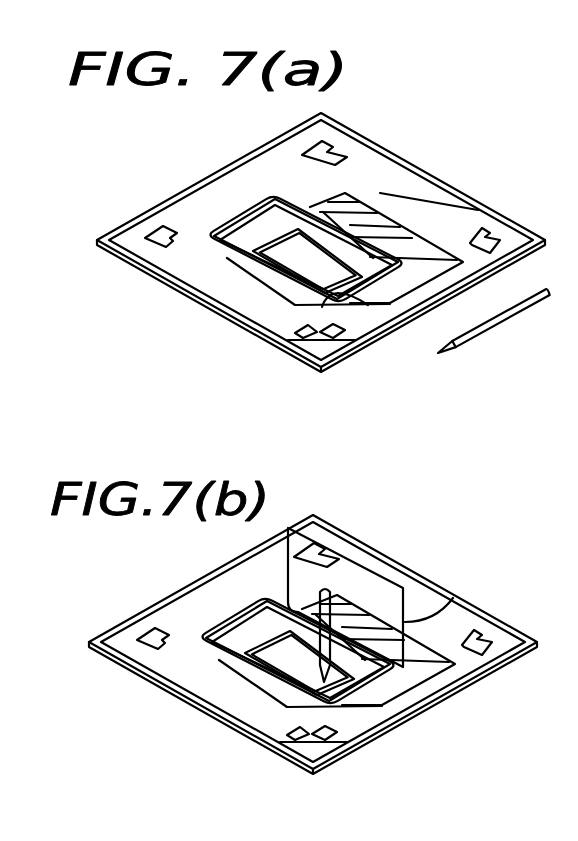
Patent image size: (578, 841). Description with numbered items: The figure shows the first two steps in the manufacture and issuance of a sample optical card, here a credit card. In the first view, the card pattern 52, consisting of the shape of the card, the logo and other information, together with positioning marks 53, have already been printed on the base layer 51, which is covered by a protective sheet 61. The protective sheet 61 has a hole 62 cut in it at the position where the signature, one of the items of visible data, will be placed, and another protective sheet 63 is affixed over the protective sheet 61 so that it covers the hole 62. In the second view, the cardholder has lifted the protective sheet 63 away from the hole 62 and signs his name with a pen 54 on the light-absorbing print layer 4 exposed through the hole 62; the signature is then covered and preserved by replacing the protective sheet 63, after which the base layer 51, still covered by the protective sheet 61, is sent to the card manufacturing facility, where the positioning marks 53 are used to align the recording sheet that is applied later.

In FIG. 7A, the light-absorbing print layer 4 is at (228, 243).
In FIG. 7B, the light-absorbing print layer 4 is at (248, 642).
In FIG. 7A, the base layer 51 is at (328, 348).
In FIG. 7B, the base layer 51 is at (320, 750).
In FIG. 7A, the card pattern 52 is at (200, 243).
In FIG. 7B, the card pattern 52 is at (225, 660).
In FIG. 7A, the positioning marks 53 is at (490, 240).
In FIG. 7B, the positioning marks 53 is at (480, 644).
In FIG. 7A, the pen 54 is at (480, 332).
In FIG. 7A, the protective sheet 61 is at (317, 337).
In FIG. 7B, the protective sheet 61 is at (290, 742).
In FIG. 7A, the hole 62 is at (277, 253).
In FIG. 7B, the hole 62 is at (357, 693).
In FIG. 7A, the protective sheet 63 is at (345, 297).
In FIG. 7B, the protective sheet 63 is at (453, 598).